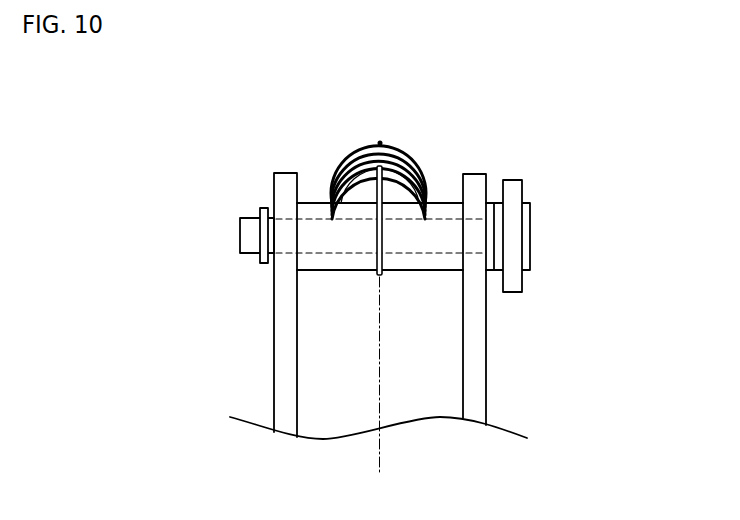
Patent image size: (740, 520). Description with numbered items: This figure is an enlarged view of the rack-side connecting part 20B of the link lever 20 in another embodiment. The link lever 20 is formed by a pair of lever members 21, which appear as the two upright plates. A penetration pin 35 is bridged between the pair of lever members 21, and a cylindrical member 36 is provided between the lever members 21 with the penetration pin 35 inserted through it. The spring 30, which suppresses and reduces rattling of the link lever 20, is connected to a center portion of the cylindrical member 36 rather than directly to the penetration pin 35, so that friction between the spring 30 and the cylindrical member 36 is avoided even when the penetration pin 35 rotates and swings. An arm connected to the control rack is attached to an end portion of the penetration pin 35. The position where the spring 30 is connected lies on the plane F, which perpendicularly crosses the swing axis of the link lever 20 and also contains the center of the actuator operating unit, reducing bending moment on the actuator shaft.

The link lever 20 is at (369, 306).
The rack-side connecting part 20B is at (522, 180).
The lever members 21 is at (285, 375).
The spring 30 is at (354, 151).
The penetration pin 35 is at (441, 233).
The cylindrical member 36 is at (412, 263).
The plane F is at (378, 422).